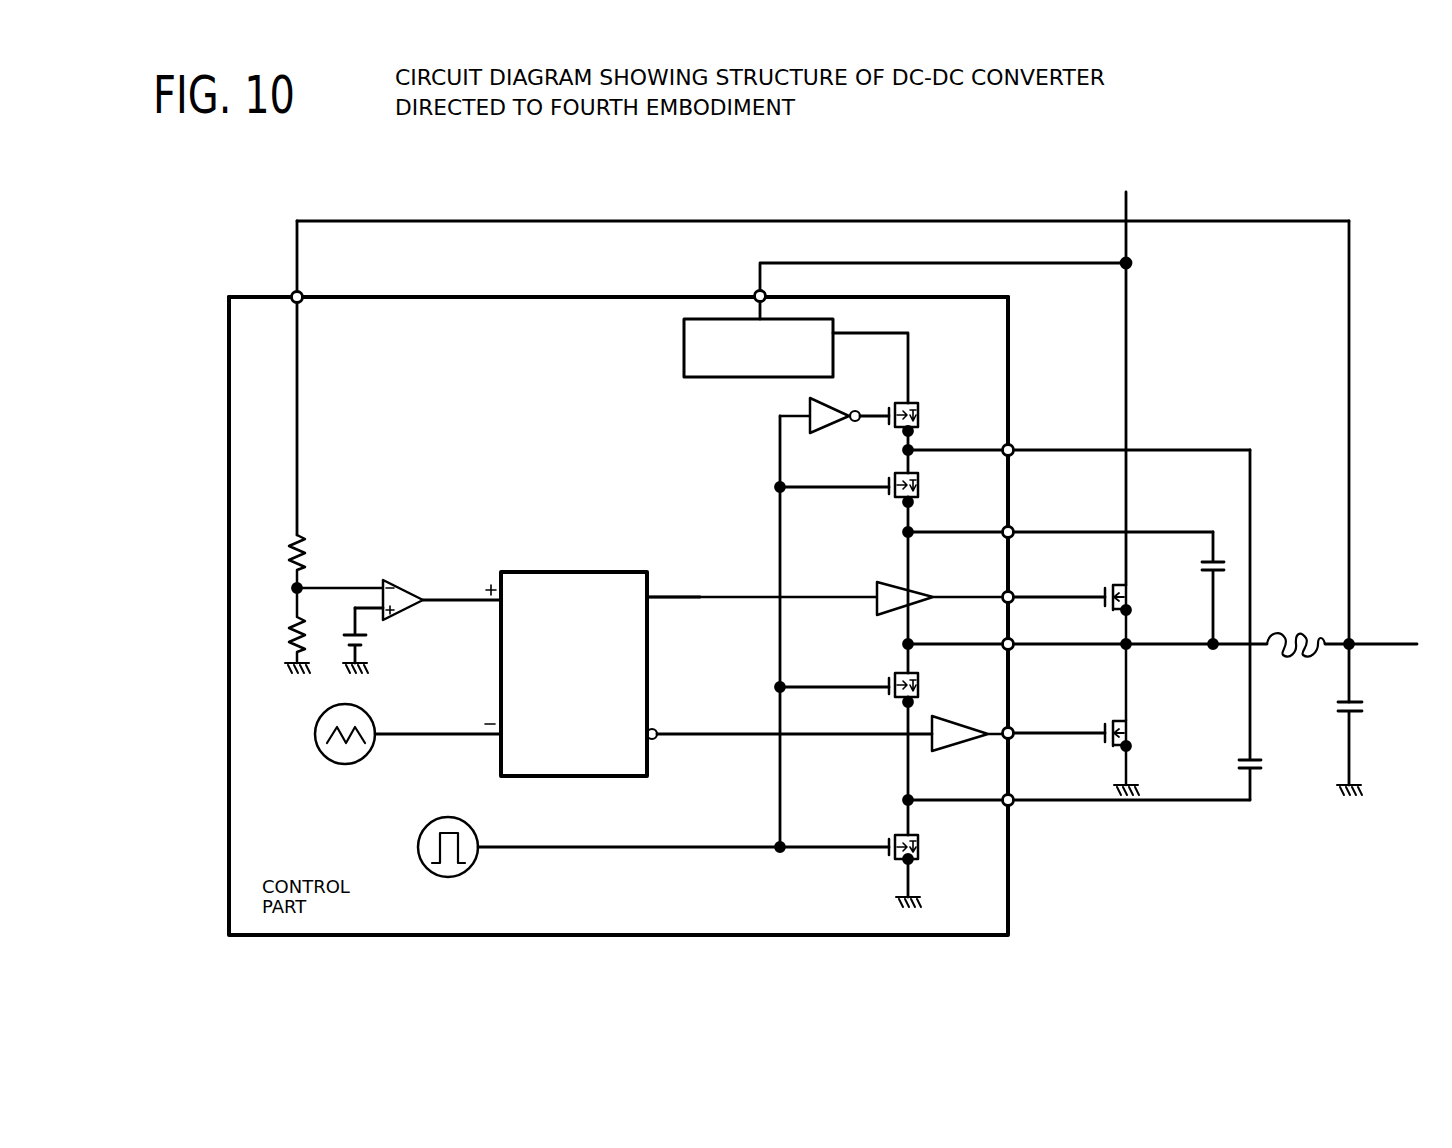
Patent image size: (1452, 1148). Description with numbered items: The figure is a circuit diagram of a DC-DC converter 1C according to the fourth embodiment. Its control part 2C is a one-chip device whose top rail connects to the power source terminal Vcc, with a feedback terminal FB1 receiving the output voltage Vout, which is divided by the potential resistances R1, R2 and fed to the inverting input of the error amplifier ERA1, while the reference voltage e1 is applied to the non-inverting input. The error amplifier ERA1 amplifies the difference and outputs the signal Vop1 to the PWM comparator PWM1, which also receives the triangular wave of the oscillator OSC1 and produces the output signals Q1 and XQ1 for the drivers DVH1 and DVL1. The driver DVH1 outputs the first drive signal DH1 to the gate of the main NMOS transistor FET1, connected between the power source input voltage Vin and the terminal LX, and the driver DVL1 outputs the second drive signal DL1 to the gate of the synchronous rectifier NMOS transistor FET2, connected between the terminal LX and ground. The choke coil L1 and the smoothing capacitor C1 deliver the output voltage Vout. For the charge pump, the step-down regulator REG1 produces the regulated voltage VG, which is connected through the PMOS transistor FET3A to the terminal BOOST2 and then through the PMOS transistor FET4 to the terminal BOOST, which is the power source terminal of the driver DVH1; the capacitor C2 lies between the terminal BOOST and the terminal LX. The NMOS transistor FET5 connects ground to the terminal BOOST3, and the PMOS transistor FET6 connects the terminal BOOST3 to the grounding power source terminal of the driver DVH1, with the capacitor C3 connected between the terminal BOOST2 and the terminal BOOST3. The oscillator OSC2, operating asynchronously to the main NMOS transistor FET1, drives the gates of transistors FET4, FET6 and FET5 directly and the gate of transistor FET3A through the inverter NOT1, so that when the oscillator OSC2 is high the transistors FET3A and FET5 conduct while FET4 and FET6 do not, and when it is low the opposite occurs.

The DC-DC converter 1C is at (790, 199).
The control part 2C is at (422, 297).
The feedback terminal FB1 is at (278, 378).
The power source input voltage Vin is at (1126, 203).
The power source terminal Vcc is at (921, 291).
The step-down regulator REG1 is at (822, 320).
The regulator output voltage VG is at (899, 333).
The inverter NOT1 is at (808, 409).
The PMOS transistor FET3A is at (893, 437).
The terminal BOOST2 is at (1079, 440).
The PMOS transistor FET4 is at (847, 573).
The terminal BOOST is at (1060, 521).
The capacitor C2 is at (1197, 590).
The driver DVH1 is at (827, 589).
The output signal Q1 is at (673, 586).
The first drive signal DH1 is at (1054, 587).
The main NMOS transistor FET1 is at (1141, 652).
The terminal LX is at (1086, 634).
The choke coil L1 is at (1342, 631).
The output voltage Vout is at (1370, 644).
The smoothing capacitor C1 is at (1363, 746).
The PMOS transistor FET6 is at (847, 745).
The output signal XQ1 is at (789, 724).
The driver DVL1 is at (961, 746).
The second drive signal DL1 is at (1054, 723).
The synchronous rectifier NMOS transistor FET2 is at (1141, 757).
The capacitor C3 is at (1234, 625).
The terminal BOOST3 is at (1077, 815).
The NMOS transistor FET5 is at (721, 871).
The potential resistance R1 is at (281, 564).
The potential resistance R2 is at (284, 630).
The error amplifier ERA1 is at (360, 587).
The output signal Vop1 is at (462, 588).
The reference voltage e1 is at (367, 640).
The PWM comparator PWM1 is at (642, 678).
The triangular wave oscillator OSC1 is at (408, 749).
The oscillator OSC2 is at (448, 860).